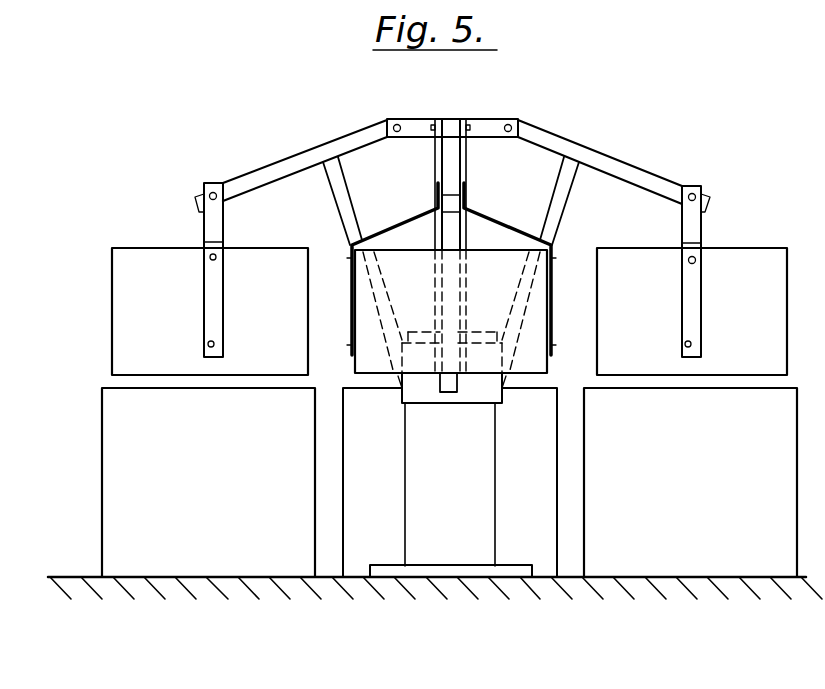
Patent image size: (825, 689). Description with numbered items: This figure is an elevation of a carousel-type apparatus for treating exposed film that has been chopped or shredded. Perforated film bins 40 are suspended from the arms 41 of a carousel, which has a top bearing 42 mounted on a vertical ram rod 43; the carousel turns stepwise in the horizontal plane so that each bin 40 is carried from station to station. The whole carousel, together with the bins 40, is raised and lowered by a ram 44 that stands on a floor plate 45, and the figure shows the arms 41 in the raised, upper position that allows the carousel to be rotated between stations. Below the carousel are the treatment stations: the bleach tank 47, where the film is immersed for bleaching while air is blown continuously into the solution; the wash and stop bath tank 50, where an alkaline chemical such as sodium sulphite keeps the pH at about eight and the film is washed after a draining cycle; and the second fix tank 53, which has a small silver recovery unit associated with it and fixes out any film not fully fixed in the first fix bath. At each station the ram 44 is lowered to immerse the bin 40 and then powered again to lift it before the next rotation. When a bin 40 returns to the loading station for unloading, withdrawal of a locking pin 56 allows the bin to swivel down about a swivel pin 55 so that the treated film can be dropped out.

The perforated film bin 40 is at (142, 253).
The carousel arm 41 is at (612, 163).
The top bearing 42 is at (453, 124).
The vertical ram rod 43 is at (468, 157).
The ram 44 is at (482, 457).
The floor plate 45 is at (475, 570).
The bleach tank 47 is at (223, 555).
The wash and stop bath tank 50 is at (358, 558).
The second fix tank 53 is at (672, 563).
The swivel pin 55 is at (691, 344).
The locking pin 56 is at (694, 258).